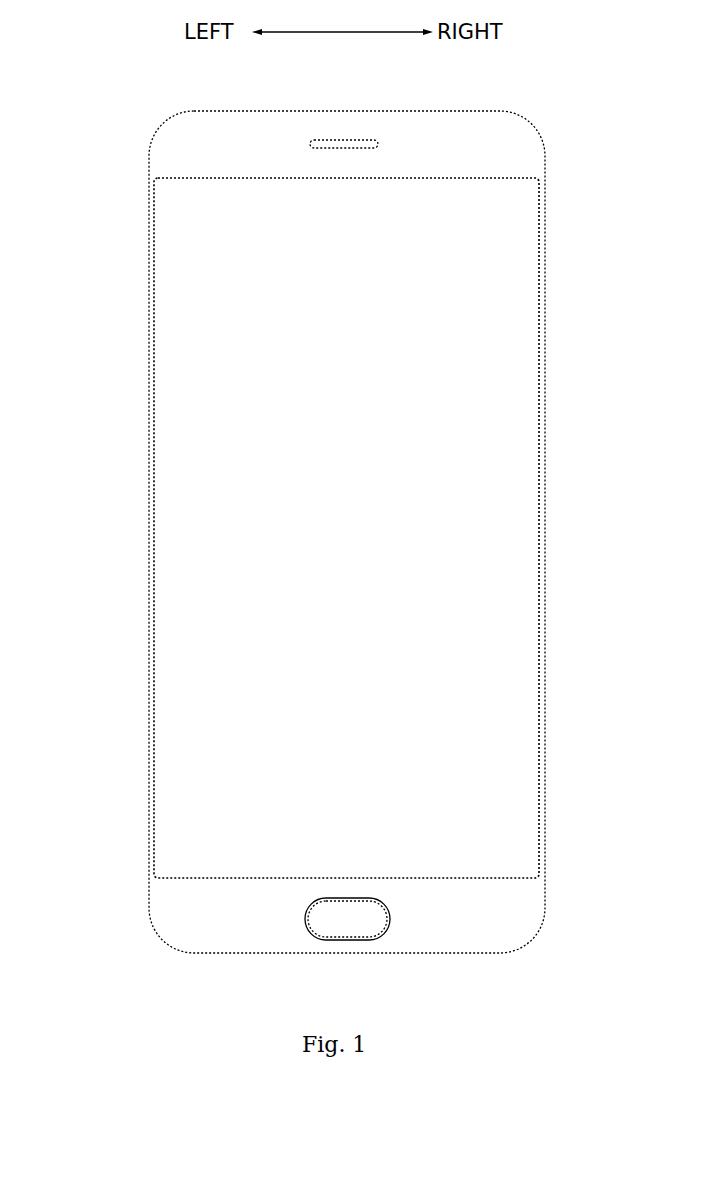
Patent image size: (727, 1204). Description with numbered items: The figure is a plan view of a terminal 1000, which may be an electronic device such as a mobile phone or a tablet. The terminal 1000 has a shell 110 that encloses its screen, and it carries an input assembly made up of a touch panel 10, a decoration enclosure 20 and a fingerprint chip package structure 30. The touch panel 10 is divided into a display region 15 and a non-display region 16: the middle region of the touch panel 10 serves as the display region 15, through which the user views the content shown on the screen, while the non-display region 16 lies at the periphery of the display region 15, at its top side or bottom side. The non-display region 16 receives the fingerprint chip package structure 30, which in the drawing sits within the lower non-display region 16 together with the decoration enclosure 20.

The electronic device 1000 is at (143, 78).
The housing 10 is at (533, 901).
The side wall of housing 110 is at (543, 462).
The display screen 15 is at (160, 812).
The non-display region 16 is at (412, 127).
The home button 20 is at (320, 938).
The fingerprint sensor 30 is at (358, 932).